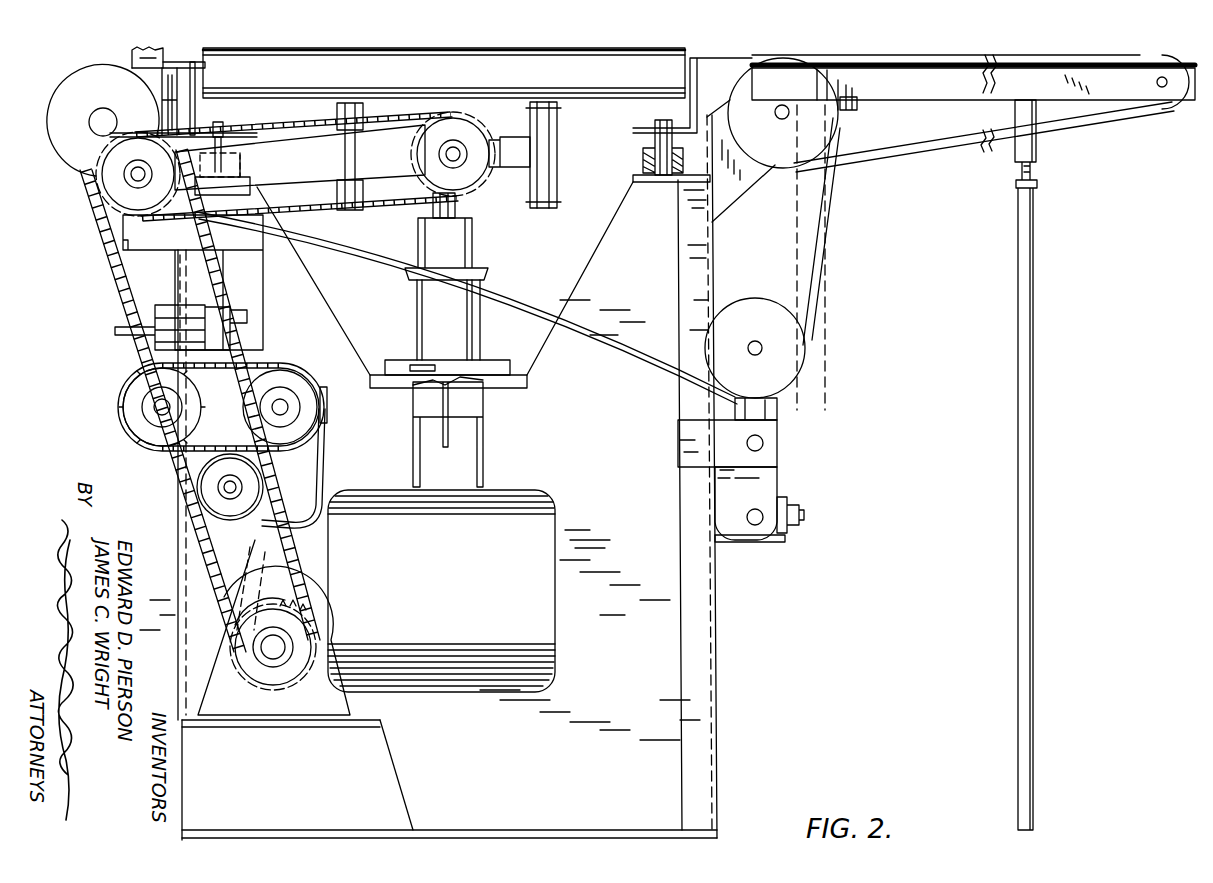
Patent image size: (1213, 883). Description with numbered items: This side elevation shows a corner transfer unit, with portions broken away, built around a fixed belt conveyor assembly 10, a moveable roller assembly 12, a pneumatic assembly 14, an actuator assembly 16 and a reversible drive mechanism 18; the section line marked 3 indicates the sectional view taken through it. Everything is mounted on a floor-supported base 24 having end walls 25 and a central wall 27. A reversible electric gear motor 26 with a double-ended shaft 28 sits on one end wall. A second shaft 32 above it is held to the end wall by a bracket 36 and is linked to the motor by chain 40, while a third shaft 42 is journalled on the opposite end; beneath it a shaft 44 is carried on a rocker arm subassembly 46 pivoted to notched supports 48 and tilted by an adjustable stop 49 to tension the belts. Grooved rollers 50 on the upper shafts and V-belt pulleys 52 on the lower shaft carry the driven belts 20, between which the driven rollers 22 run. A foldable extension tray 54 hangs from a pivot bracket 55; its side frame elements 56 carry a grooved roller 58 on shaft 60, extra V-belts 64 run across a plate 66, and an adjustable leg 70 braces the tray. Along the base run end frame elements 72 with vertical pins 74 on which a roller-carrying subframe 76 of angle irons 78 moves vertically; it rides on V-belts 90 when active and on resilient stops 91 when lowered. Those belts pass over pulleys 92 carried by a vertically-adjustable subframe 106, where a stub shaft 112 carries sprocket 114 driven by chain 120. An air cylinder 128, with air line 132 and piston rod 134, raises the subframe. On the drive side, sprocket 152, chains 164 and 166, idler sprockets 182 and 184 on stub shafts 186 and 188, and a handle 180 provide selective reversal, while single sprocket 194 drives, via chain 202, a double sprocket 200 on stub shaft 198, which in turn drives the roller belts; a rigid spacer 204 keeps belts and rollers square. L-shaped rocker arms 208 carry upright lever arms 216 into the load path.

The belt conveyor assembly 10 is at (85, 73).
The roller assembly 12 is at (444, 73).
The pneumatic assembly 14 is at (500, 272).
The actuator assembly 16 is at (135, 326).
The drive mechanism 18 is at (166, 456).
The driven belts 20 is at (170, 66).
The driven rollers 22 is at (444, 65).
The base 24 is at (670, 637).
The end walls 25 is at (184, 655).
The reversible electric gear motor 26 is at (441, 591).
The central wall 27 is at (420, 520).
The double-ended shaft 28 is at (271, 657).
The second shaft 32 is at (103, 122).
The bracket 36 is at (160, 122).
The chain 40 is at (104, 255).
The third shaft 42 is at (787, 118).
The shaft 44 is at (754, 354).
The rocker arm subassembly 46 is at (778, 475).
The notched supports 48 is at (778, 432).
The adjustable stop 49 is at (804, 516).
The grooved rollers 50 is at (72, 148).
The V-belt pulleys 52 is at (806, 355).
The foldable extension tray 54 is at (1099, 109).
The pivot bracket 55 is at (843, 112).
The side frame elements 56 is at (935, 82).
The grooved roller 58 is at (1160, 62).
The shaft 60 is at (1160, 88).
The V-belts 64 is at (960, 61).
The plate 66 is at (1030, 63).
The adjustable leg 70 is at (1036, 458).
The end frame elements 72 is at (243, 175).
The vertical pins 74 is at (224, 124).
The roller-carrying subframe 76 is at (196, 84).
The angle irons 78 is at (636, 131).
The V-belts 90 is at (545, 130).
The resilient stops 91 is at (640, 168).
The pulleys 92 is at (556, 196).
The vertically-adjustable subframe 106 is at (495, 180).
The stub shaft 112 is at (448, 156).
The sprocket 114 is at (462, 130).
The chain 120 is at (330, 122).
The air cylinder 128 is at (470, 338).
The air line 132 is at (413, 366).
The piston rod 134 is at (458, 208).
The sprocket 152 is at (222, 540).
The chain 164 is at (200, 496).
The sprocket chain 166 is at (322, 483).
The handle 180 is at (206, 506).
The idler sprocket 182 is at (132, 395).
The idler sprocket 184 is at (296, 392).
The stub shaft 186 is at (148, 412).
The stub shaft 188 is at (282, 390).
The single sprocket 194 is at (248, 672).
The stub shaft 198 is at (128, 180).
The double sprocket 200 is at (105, 176).
The chain 202 is at (212, 585).
The rigid spacer 204 is at (300, 157).
The L-shaped rocker arms 208 is at (264, 318).
The lever arms 216 is at (132, 52).
The section line 3 is at (390, 49).